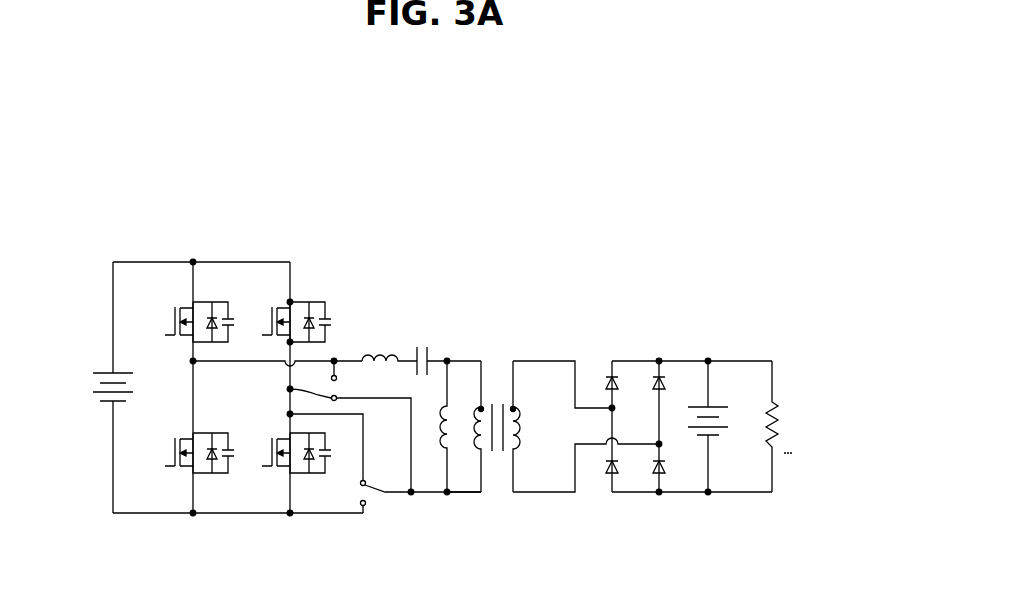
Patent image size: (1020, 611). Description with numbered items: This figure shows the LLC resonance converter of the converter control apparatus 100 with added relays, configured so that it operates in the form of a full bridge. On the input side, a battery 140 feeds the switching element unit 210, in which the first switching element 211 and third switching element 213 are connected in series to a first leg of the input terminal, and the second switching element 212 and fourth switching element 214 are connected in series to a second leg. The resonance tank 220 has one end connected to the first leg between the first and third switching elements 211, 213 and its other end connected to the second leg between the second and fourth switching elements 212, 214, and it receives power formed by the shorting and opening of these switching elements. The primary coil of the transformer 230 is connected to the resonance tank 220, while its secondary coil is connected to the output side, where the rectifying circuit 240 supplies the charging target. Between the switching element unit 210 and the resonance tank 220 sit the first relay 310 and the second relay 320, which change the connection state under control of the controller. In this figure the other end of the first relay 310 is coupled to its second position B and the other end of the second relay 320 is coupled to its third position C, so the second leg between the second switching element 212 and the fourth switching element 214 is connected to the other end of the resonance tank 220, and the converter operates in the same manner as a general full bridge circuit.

The converter control apparatus 100 is at (499, 226).
The battery 140 is at (100, 370).
The switching element unit 210 is at (270, 257).
The first switching element 211 is at (220, 301).
The second switching element 212 is at (317, 301).
The third switching element 213 is at (219, 475).
The fourth switching element 214 is at (316, 475).
The resonance tank 220 is at (394, 353).
The transformer 230 is at (497, 397).
The rectifying circuit 240 is at (690, 360).
The first relay 310 is at (291, 389).
The second relay 320 is at (393, 493).